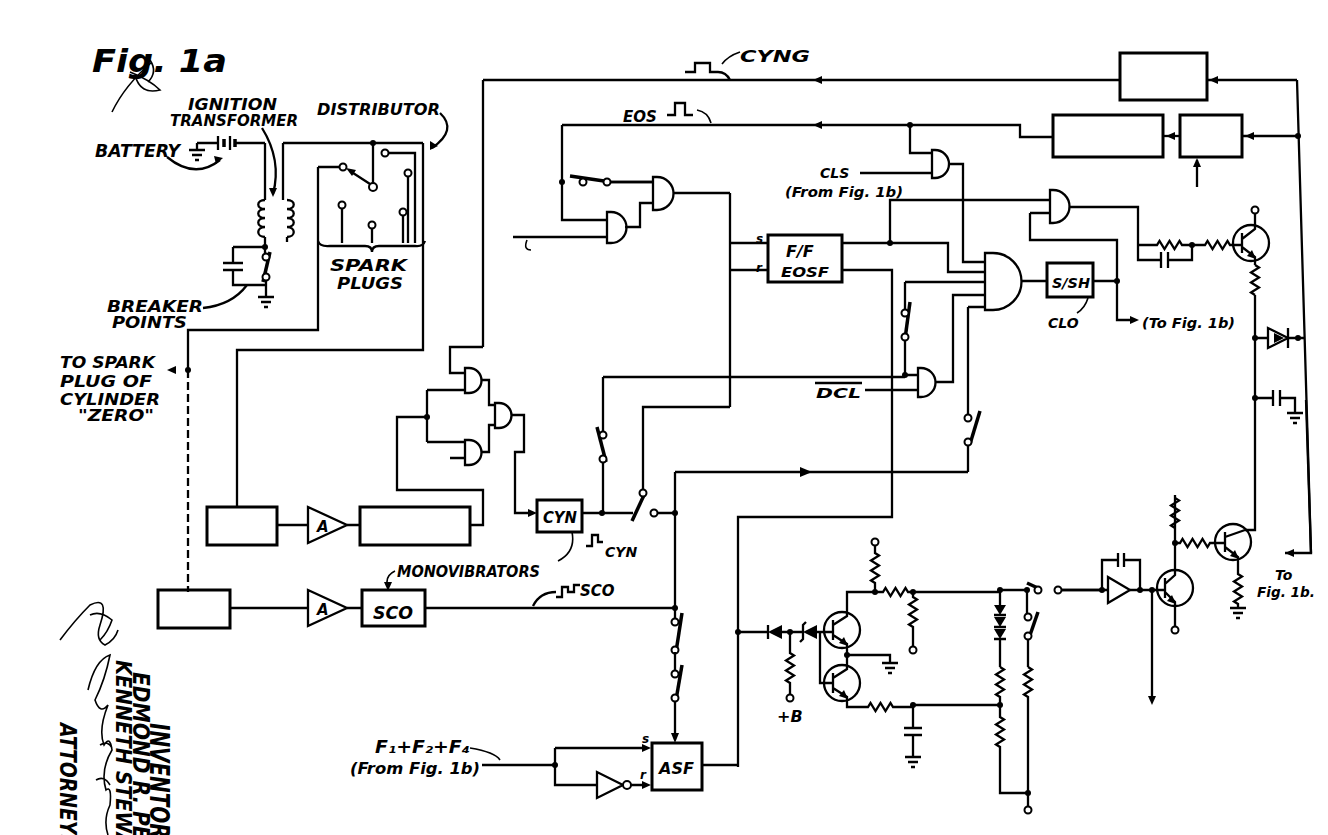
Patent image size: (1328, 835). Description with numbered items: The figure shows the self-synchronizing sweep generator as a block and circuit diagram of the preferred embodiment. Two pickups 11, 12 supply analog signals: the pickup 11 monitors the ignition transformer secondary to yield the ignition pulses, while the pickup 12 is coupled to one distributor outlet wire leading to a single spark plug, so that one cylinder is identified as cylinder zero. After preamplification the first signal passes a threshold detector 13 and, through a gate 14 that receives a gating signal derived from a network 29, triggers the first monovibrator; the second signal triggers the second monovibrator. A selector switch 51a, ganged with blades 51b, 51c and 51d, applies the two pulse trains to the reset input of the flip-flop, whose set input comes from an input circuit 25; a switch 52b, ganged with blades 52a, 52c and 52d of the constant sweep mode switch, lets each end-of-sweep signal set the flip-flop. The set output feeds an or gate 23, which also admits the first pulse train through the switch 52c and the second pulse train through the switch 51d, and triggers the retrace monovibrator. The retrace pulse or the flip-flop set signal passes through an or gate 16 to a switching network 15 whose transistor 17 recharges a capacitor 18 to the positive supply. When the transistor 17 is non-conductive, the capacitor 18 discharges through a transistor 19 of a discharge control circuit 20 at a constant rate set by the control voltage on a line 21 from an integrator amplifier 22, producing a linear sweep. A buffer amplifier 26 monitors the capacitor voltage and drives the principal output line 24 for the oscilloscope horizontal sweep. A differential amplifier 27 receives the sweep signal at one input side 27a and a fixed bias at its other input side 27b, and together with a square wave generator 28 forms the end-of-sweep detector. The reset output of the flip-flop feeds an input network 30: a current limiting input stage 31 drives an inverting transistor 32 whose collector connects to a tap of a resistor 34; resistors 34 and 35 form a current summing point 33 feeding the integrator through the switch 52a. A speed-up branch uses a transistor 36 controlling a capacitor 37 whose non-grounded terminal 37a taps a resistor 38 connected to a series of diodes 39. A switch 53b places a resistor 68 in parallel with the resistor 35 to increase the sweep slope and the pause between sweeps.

The pickup 11 is at (293, 495).
The pickup 12 is at (230, 594).
The threshold detector 13 is at (381, 507).
The gate 14 is at (467, 426).
The switching network 15 is at (1228, 231).
The or gate 16 is at (1065, 192).
The transistor 17 is at (1246, 262).
The capacitor 18 is at (1288, 392).
The transistor 19 is at (1240, 513).
The discharge control circuit 20 is at (1190, 606).
The line 21 is at (1154, 668).
The integrator amplifier 22 is at (1120, 606).
The or gate 23 is at (1012, 243).
The line 24 is at (1308, 492).
The input circuit 25 is at (678, 250).
The buffer amplifier 26 is at (1284, 329).
The differential amplifier 27 is at (1210, 157).
The input side of differential amplifier 27a is at (1278, 114).
The other input side of differential amplifier 27b is at (1197, 187).
The square wave generator 28 is at (1100, 115).
The network 29 is at (1207, 60).
The input network 30 is at (952, 643).
The current limiting input stage 31 is at (776, 670).
The inverting transistor 32 is at (838, 624).
The output terminal 33 is at (1005, 582).
The resistor 34 is at (893, 590).
The resistor 35 is at (917, 616).
The transistor 36 is at (841, 703).
The capacitor 37 is at (905, 732).
The non-grounded terminal of capacitor 37a is at (913, 703).
The resistor 38 is at (997, 685).
The series of diodes 39 is at (993, 628).
The selector or mode switch 51a is at (676, 498).
The mode switch blade 51b is at (597, 447).
The mode switch blade 51c is at (672, 637).
The mode switch blade 51d is at (980, 436).
The mode switch blade 52a is at (1048, 582).
The constant sweep mode switch blade 52b is at (607, 168).
The mode switch blade 52c is at (902, 320).
The mode switch blade 52d is at (672, 680).
The mode switch 53b is at (1038, 626).
The resistor 68 is at (1033, 674).